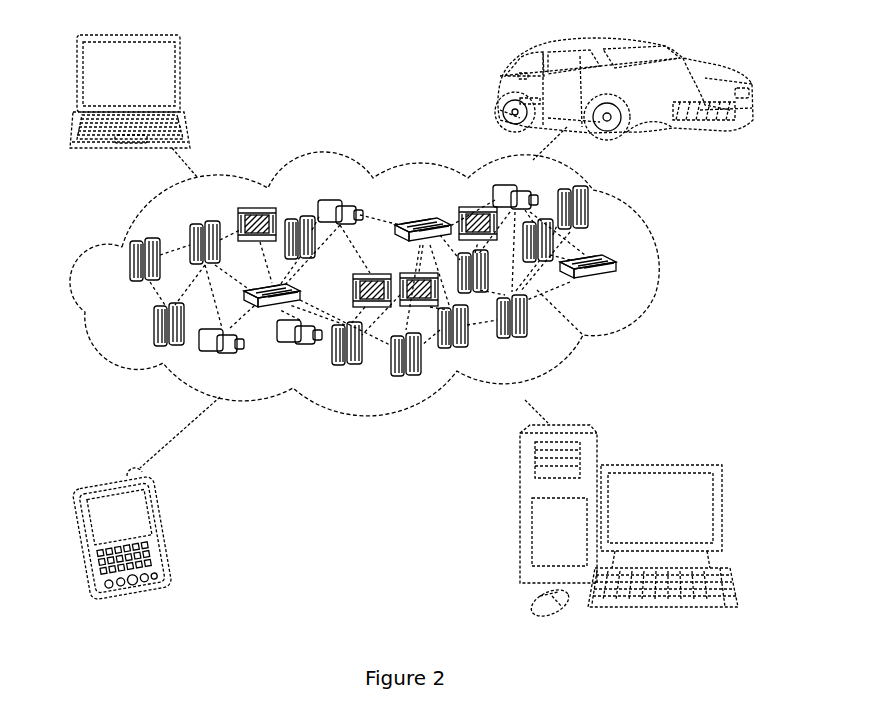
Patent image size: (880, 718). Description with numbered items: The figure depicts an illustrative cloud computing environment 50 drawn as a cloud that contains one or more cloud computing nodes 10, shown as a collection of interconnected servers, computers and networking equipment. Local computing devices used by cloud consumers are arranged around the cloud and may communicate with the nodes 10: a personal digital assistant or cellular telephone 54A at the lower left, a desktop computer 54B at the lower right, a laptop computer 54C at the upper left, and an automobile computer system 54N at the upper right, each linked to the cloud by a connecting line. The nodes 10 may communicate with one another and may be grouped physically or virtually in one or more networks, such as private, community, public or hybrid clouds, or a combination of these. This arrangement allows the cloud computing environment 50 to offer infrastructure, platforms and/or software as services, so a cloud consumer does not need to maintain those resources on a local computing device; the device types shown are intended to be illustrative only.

The cloud computing nodes 10 is at (628, 293).
The cloud computing environment 50 is at (657, 268).
The personal digital assistant (PDA) or cellular telephone 54A is at (170, 530).
The desktop computer 54B is at (661, 465).
The laptop computer 54C is at (180, 79).
The automobile computer system 54N is at (500, 94).